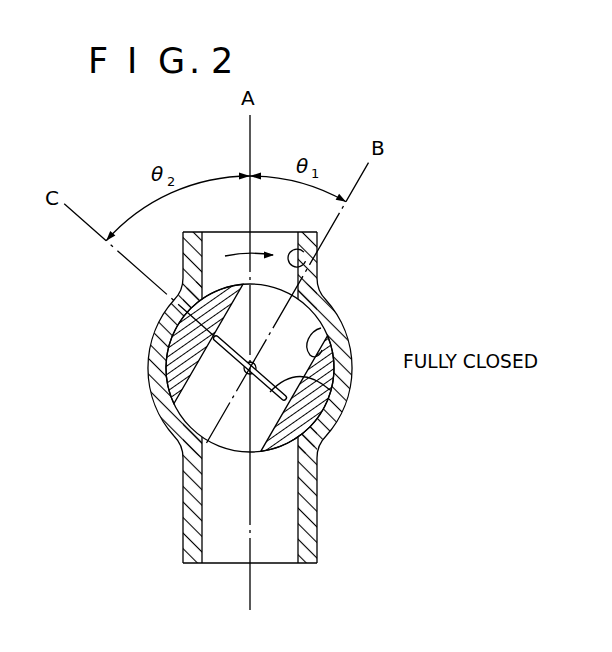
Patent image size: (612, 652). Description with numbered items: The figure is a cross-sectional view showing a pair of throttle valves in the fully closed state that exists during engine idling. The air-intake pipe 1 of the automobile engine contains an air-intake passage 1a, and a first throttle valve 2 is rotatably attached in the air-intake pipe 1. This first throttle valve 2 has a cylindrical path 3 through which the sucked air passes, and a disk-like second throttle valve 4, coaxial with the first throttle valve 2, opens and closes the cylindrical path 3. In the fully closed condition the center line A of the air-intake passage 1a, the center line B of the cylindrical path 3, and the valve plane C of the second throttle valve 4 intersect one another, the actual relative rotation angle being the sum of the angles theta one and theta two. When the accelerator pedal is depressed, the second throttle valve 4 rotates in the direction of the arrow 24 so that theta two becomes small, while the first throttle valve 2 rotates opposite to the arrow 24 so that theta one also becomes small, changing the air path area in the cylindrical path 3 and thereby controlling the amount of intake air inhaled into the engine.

The air-intake pipe 1 is at (192, 490).
The air-intake passage 1a is at (306, 261).
The first throttle valve 2 is at (178, 347).
The cylindrical path 3 is at (321, 328).
The second throttle valve 4 is at (338, 423).
The arrow 24 is at (242, 255).